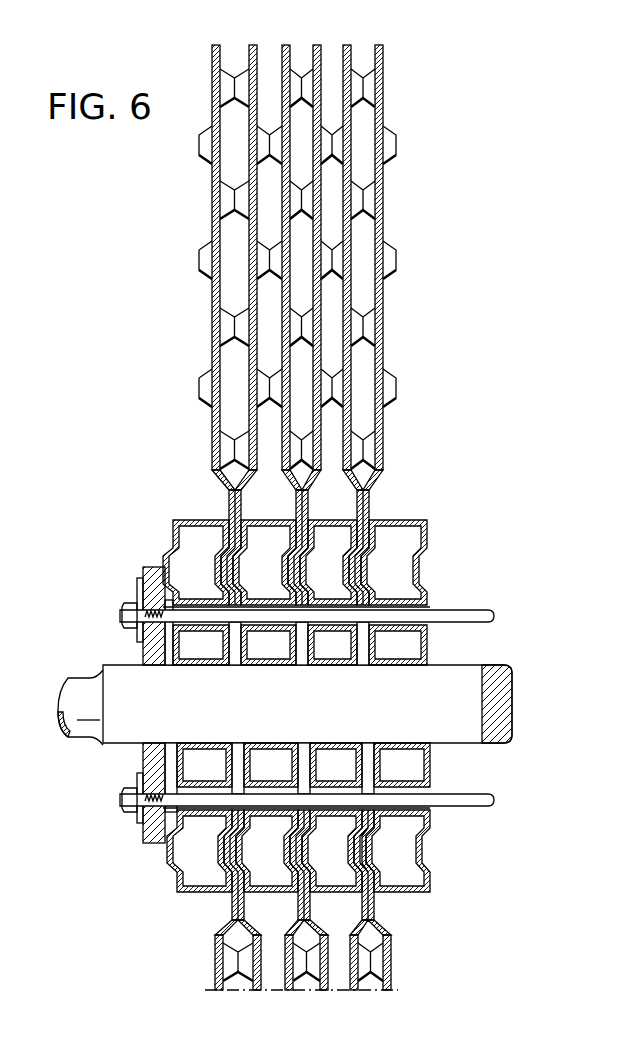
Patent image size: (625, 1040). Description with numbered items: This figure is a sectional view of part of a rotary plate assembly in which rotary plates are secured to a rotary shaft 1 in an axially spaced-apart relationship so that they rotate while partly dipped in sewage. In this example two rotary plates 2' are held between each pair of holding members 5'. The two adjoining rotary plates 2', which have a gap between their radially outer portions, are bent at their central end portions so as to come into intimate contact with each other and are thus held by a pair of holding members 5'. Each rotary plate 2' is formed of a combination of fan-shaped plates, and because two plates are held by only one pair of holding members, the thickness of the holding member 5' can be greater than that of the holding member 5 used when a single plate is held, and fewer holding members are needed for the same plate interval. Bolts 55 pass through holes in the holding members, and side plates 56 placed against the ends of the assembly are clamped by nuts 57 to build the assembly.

The rotary shaft 1 is at (115, 670).
The rotary plate 2' is at (281, 500).
The holding member 5 is at (296, 687).
The holding member 5' is at (299, 681).
The bolt 55 is at (202, 612).
The side plate 56 is at (138, 578).
The nut 57 is at (130, 607).